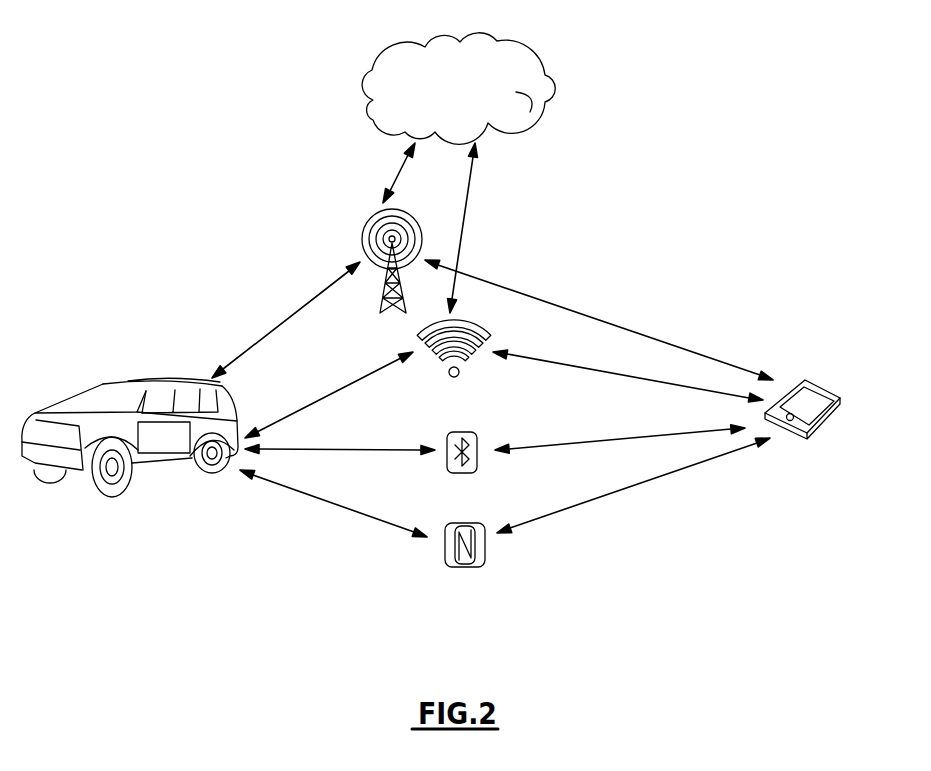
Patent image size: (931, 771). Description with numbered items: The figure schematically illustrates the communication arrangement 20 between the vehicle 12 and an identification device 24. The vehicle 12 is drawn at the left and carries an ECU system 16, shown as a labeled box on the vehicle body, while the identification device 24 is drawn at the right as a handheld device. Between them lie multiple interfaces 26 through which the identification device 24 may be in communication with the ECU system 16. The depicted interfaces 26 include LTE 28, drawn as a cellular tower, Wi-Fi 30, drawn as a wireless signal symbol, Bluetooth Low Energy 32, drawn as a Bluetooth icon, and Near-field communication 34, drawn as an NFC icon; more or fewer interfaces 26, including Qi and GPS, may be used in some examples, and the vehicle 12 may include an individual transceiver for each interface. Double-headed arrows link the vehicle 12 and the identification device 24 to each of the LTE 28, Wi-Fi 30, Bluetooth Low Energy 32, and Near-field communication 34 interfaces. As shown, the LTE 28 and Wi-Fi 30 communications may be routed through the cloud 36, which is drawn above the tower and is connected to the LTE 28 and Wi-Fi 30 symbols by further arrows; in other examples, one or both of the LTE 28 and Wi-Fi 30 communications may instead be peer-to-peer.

The vehicle 12 is at (130, 444).
The ECU system 16 is at (160, 455).
The communication system 20 is at (190, 195).
The identification device 24 is at (812, 393).
The interfaces 26 is at (518, 260).
The LTE 28 is at (375, 230).
The Wi-Fi 30 is at (422, 337).
The Bluetooth Low Energy (BLE) 32 is at (448, 435).
The Near-field communication 34 is at (450, 525).
The cloud 36 is at (535, 87).